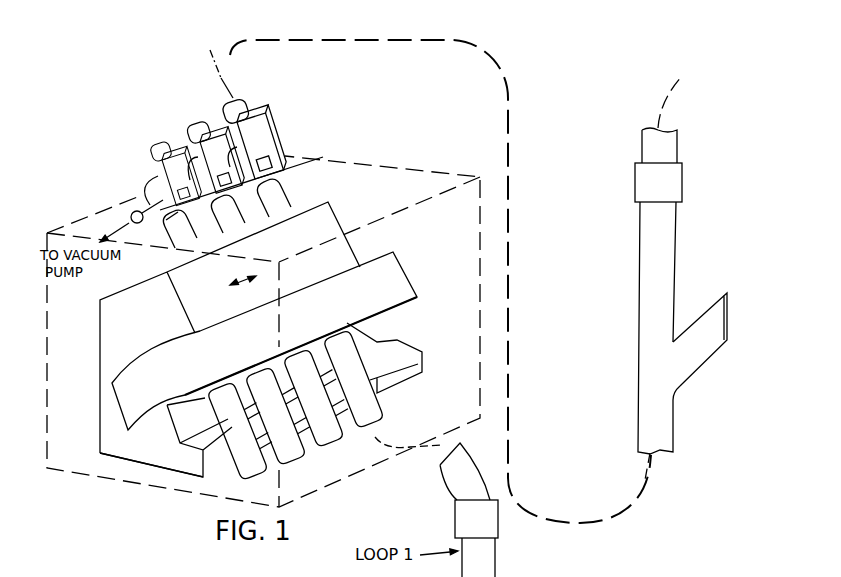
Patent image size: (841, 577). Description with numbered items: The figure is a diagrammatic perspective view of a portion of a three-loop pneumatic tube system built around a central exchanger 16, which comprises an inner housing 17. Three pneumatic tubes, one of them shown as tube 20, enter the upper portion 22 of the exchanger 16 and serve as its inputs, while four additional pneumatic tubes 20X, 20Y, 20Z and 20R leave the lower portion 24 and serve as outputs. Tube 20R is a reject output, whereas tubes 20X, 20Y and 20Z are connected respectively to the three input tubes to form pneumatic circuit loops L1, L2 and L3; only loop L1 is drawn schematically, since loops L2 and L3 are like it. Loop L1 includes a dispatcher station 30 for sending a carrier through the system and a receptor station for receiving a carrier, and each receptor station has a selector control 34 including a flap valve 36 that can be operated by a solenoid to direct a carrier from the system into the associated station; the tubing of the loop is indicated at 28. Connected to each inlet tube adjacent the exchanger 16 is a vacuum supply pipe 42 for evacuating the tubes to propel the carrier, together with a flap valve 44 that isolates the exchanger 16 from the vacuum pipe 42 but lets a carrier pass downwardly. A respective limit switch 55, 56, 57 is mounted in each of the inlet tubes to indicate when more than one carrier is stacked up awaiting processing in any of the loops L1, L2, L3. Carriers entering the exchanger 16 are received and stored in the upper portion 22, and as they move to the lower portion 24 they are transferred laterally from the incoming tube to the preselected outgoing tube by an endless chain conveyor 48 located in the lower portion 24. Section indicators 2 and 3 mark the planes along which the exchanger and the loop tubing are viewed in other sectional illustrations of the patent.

The section line 2- 2 is at (243, 290).
The section line 3- 3 is at (214, 44).
The central exchanger 16 is at (150, 476).
The inner housing 17 is at (100, 376).
The pneumatic tube 20 is at (148, 162).
The reject output tube 20R is at (222, 383).
The output pneumatic tube 20X is at (258, 368).
The output pneumatic tube 20Y is at (297, 350).
The output pneumatic tube 20Z is at (337, 331).
The upper portion 22 is at (108, 333).
The lower portion 24 is at (112, 450).
The tube 28 is at (686, 236).
The dispatcher station 30 is at (727, 293).
The selector control 34 is at (682, 177).
The flap valve 36 is at (505, 576).
The vacuum supply pipe 42 is at (130, 213).
The flap valve 44 is at (262, 133).
The endless chain conveyor 48 is at (412, 273).
The limit switch 55 is at (273, 160).
The limit switch 56 is at (276, 184).
The limit switch 57 is at (166, 220).
The pneumatic circuit loop L1 is at (243, 100).
The pneumatic circuit loop L2 is at (198, 128).
The pneumatic circuit loop L3 is at (158, 146).